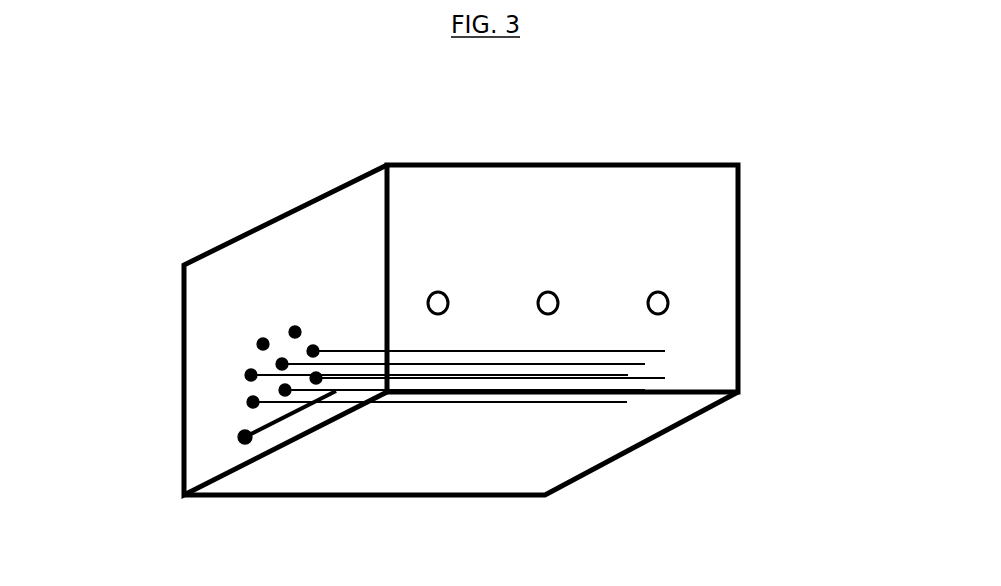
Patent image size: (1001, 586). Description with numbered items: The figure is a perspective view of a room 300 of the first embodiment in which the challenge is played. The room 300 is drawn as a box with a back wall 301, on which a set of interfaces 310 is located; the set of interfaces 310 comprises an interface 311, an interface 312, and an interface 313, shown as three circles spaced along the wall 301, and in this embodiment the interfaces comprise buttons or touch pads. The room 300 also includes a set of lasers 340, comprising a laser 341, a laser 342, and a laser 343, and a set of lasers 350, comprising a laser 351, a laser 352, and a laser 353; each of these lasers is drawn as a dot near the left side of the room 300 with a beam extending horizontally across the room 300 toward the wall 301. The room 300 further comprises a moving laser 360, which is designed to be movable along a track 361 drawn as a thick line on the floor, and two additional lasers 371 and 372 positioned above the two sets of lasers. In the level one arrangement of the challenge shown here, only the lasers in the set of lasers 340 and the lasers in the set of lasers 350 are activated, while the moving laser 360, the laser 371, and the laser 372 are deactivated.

The room 300 is at (484, 318).
The wall 301 is at (623, 177).
The set of interfaces 310 is at (452, 292).
The interface 311 is at (450, 305).
The interface 312 is at (559, 305).
The interface 313 is at (670, 307).
The set of lasers 340 is at (240, 378).
The laser 341 is at (247, 373).
The laser 342 is at (278, 362).
The laser 343 is at (314, 345).
The set of lasers 350 is at (246, 402).
The laser 351 is at (248, 404).
The laser 352 is at (289, 394).
The laser 353 is at (320, 381).
The moving laser 360 is at (247, 443).
The track 361 is at (278, 420).
The laser 371 is at (260, 339).
The laser 372 is at (295, 326).